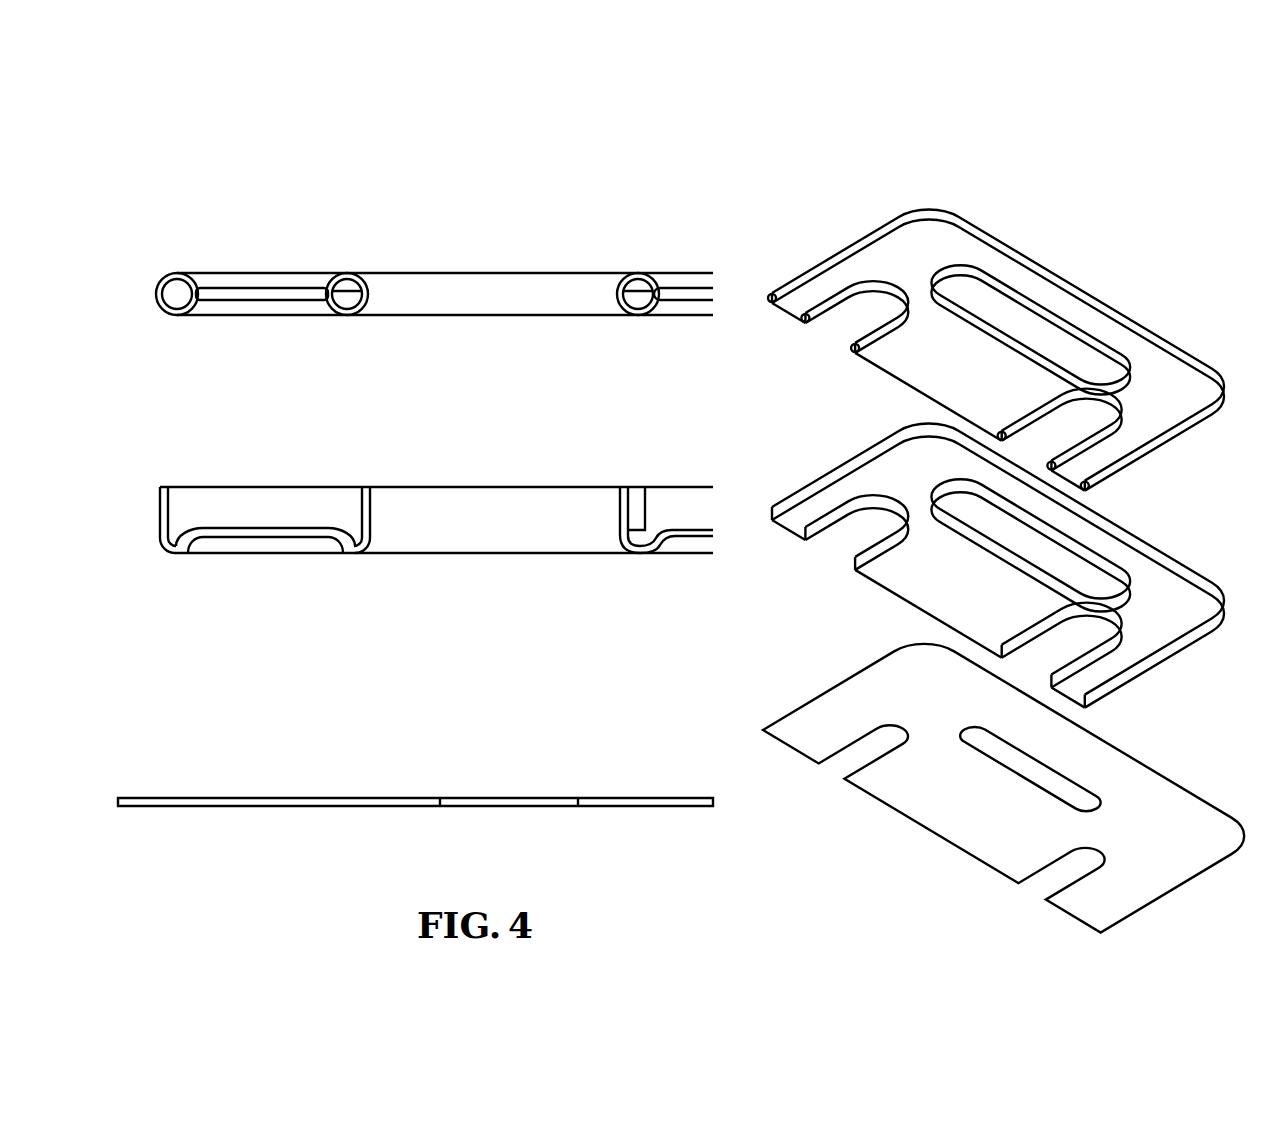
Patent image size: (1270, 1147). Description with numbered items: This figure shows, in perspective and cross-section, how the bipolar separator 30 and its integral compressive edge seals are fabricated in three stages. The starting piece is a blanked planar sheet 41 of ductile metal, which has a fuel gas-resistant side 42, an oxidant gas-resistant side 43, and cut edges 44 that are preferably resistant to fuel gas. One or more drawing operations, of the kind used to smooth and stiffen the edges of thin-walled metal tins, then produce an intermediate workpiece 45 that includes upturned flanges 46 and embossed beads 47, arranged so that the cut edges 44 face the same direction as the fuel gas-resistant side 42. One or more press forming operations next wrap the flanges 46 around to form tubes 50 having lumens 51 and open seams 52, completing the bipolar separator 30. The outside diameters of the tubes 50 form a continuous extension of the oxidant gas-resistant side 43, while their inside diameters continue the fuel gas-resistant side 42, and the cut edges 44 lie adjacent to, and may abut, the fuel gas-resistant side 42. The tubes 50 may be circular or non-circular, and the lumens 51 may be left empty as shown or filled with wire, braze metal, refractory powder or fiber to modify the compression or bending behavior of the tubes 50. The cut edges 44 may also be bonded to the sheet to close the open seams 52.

The bipolar separator 30 is at (162, 256).
The planar sheet 41 is at (172, 752).
The fuel gas-resistant side 42 is at (263, 381).
The oxidant gas-resistant side 43 is at (338, 863).
The cut edges 44 is at (197, 300).
The intermediate workpiece 45 is at (168, 430).
The flanges 46 is at (170, 508).
The embossed beads 47 is at (178, 546).
The tubes 50 is at (184, 274).
The lumens 51 is at (178, 296).
The open seams 52 is at (200, 289).